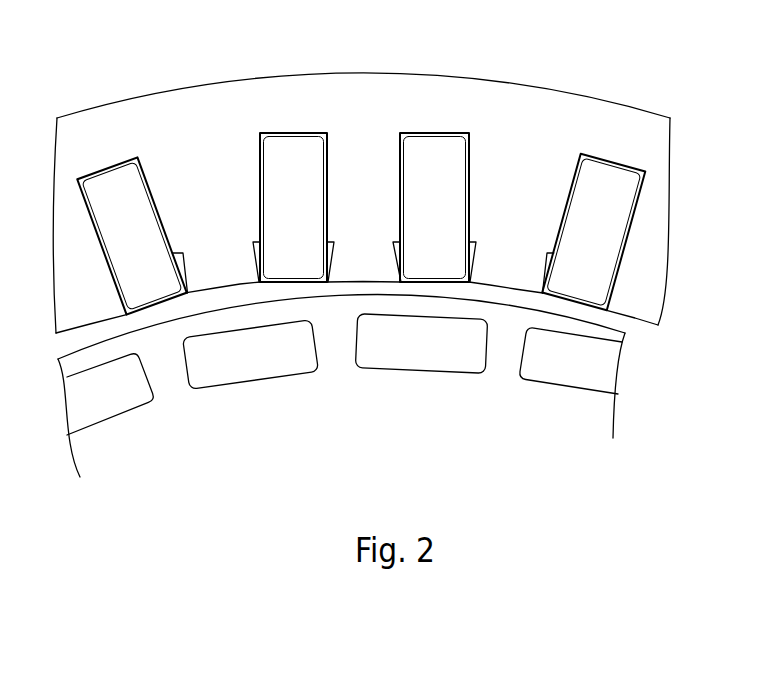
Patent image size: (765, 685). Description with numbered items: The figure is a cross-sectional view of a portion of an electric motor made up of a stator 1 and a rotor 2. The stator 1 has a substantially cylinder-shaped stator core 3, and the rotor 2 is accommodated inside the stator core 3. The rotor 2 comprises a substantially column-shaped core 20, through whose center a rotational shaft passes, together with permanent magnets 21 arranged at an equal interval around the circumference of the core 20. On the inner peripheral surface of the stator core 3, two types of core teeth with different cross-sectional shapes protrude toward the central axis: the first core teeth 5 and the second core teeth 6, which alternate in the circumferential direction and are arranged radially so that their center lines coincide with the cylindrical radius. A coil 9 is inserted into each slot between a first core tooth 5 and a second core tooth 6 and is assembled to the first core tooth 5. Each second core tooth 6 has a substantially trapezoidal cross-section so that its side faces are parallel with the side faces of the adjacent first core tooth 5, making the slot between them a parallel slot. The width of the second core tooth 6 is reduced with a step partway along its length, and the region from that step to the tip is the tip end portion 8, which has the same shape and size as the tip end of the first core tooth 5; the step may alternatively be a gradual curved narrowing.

The stator 1 is at (556, 82).
The rotor 2 is at (630, 360).
The stator core 3 is at (446, 76).
The first core tooth 5 is at (353, 210).
The second core tooth 6 is at (202, 220).
The tip end portion 8 is at (218, 273).
The coil 9 is at (122, 247).
The core 20 is at (620, 422).
The permanent magnet 21 is at (244, 384).